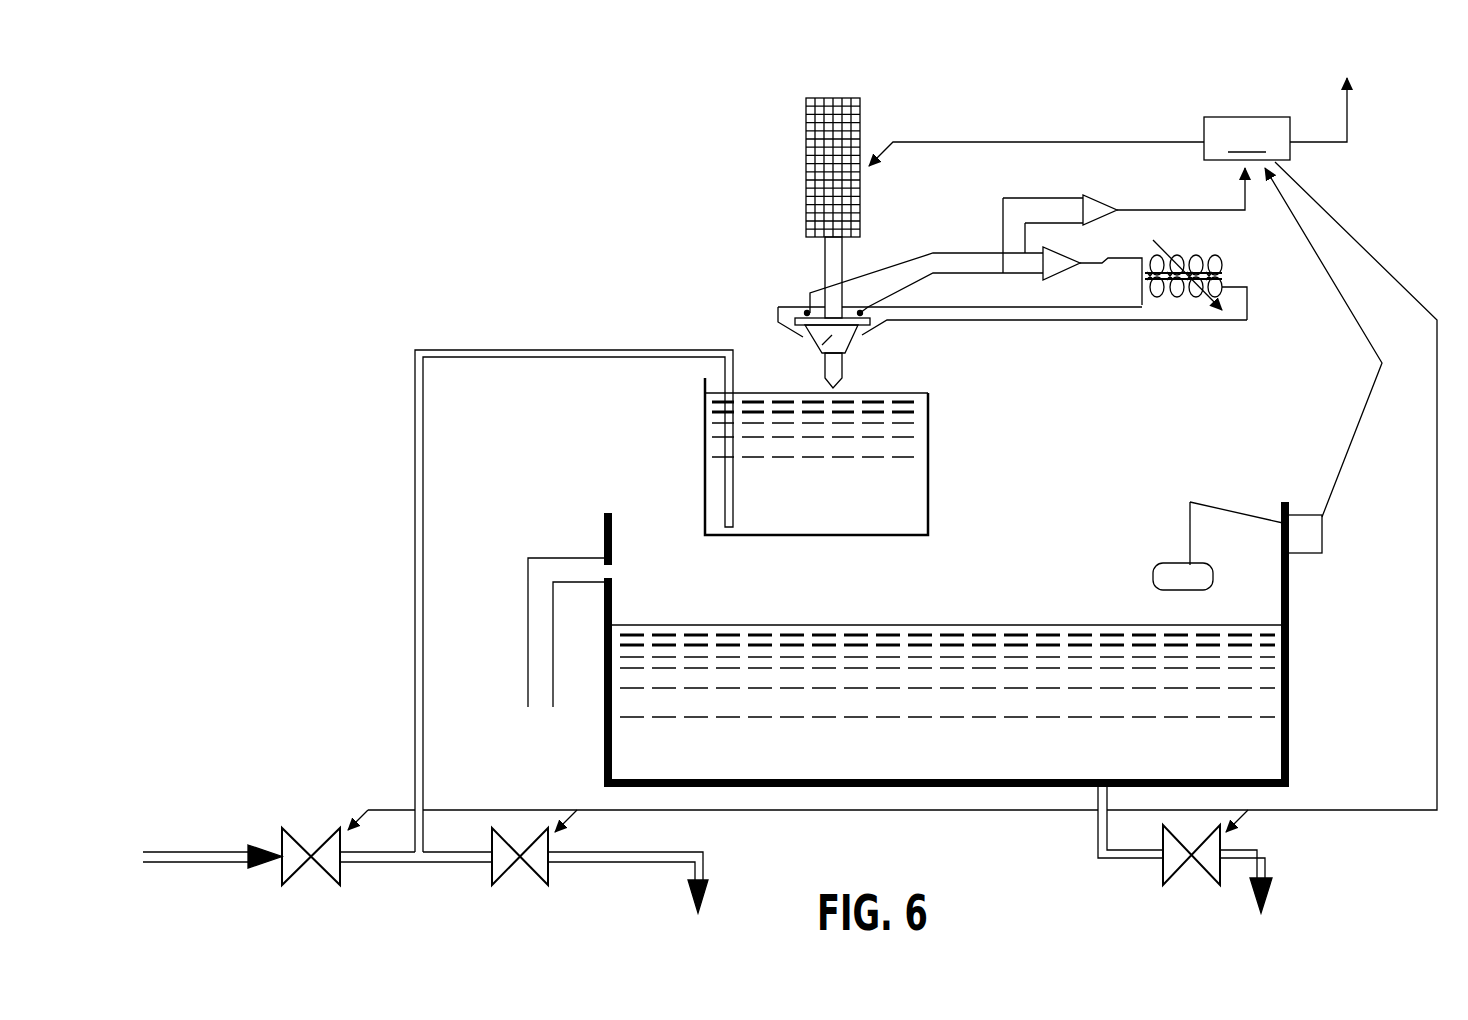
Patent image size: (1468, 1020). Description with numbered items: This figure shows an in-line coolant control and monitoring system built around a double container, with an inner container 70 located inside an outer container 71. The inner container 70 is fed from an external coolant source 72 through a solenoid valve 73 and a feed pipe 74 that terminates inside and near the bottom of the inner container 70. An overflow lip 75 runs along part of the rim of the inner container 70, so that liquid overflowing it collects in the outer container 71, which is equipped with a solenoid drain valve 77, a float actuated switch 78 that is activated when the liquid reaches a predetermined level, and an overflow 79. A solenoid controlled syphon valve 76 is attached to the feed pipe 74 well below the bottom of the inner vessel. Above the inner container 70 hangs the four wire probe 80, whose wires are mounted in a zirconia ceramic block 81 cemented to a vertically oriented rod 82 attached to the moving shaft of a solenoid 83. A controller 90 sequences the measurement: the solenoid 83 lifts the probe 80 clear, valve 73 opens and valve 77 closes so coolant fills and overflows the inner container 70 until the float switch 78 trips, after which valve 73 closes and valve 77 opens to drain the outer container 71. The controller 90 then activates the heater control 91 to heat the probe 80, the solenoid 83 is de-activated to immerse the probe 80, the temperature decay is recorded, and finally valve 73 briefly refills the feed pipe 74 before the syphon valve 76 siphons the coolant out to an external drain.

The inner container 70 is at (928, 477).
The outer container 71 is at (605, 745).
The external coolant source 72 is at (212, 858).
The solenoid valve 73 is at (310, 830).
The feed pipe 74 is at (415, 609).
The overflow lip 75 is at (936, 404).
The syphon valve 76 is at (517, 872).
The solenoid drain valve 77 is at (1195, 870).
The float actuated switch 78 is at (1203, 590).
The overflow 79 is at (575, 557).
The probe 80 is at (825, 372).
The ceramic block 81 is at (823, 348).
The vertically oriented rod 82 is at (825, 273).
The solenoid 83 is at (805, 143).
The controller 90 is at (1275, 119).
The heater control 91 is at (1233, 272).